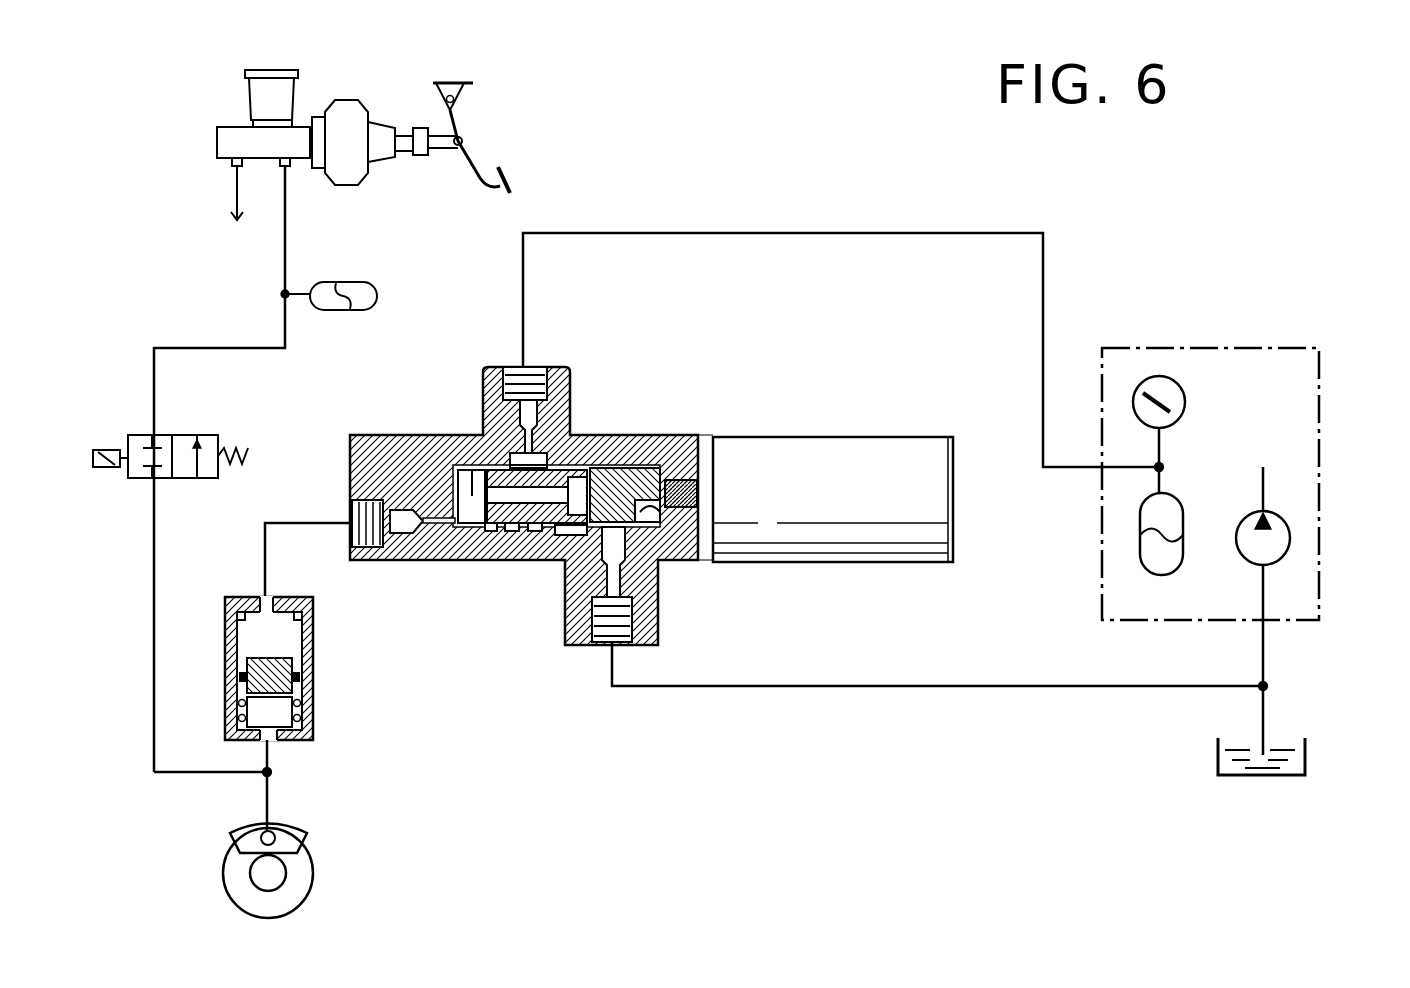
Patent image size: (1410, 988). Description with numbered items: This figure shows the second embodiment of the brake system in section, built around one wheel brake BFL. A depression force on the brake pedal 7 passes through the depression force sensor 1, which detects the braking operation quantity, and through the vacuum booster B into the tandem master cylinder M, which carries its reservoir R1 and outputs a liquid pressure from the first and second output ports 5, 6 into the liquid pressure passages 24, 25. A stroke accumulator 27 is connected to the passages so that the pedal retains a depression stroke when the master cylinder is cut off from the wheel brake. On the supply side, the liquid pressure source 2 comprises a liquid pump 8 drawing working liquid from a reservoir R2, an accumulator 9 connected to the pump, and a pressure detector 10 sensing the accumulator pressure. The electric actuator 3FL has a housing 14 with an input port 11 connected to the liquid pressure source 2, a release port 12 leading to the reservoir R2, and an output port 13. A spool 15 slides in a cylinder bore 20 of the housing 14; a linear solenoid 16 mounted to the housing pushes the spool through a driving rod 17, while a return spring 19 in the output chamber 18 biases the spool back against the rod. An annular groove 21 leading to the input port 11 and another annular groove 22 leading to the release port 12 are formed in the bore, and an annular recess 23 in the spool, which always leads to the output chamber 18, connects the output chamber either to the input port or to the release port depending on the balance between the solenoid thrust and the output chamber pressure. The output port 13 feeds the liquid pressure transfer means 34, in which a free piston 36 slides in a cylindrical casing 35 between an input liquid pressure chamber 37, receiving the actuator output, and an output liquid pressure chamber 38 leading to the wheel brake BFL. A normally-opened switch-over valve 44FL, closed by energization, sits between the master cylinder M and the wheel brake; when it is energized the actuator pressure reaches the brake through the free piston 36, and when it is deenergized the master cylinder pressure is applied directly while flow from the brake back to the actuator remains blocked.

The master cylinder M is at (243, 137).
The reservoir R1 is at (280, 82).
The vacuum booster B is at (353, 117).
The depression force sensor 1 is at (414, 128).
The brake pedal 7 is at (512, 183).
The first output port 5 is at (233, 167).
The second output port 6 is at (288, 163).
The liquid pressure passage 24 is at (230, 210).
The liquid pressure passage 25 is at (283, 278).
The stroke accumulator 27 is at (377, 297).
The switch-over valve 44FL is at (187, 435).
The housing 14 is at (403, 443).
The output chamber 18 is at (473, 483).
The annular recess 23 is at (593, 463).
The cylinder bore 20 is at (638, 465).
The driving rod 17 is at (700, 483).
The input port 11 is at (538, 373).
The release port 12 is at (625, 640).
The output port 13 is at (350, 507).
The return spring 19 is at (480, 535).
The spool 15 is at (510, 537).
The annular groove 21 is at (537, 537).
The annular groove 22 is at (648, 520).
The electric actuator 3FL is at (702, 428).
The linear solenoid 16 is at (840, 506).
The liquid pressure source 2 is at (1240, 344).
The pressure detector 10 is at (1186, 400).
The accumulator 9 is at (1145, 500).
The liquid pump 8 is at (1278, 520).
The reservoir R2 is at (1306, 752).
The liquid pressure transfer means 34 is at (320, 677).
The input liquid pressure chamber 37 is at (255, 625).
The free piston 36 is at (250, 665).
The output liquid pressure chamber 38 is at (255, 713).
The cylindrical casing 35 is at (313, 732).
The wheel brake BFL is at (290, 833).